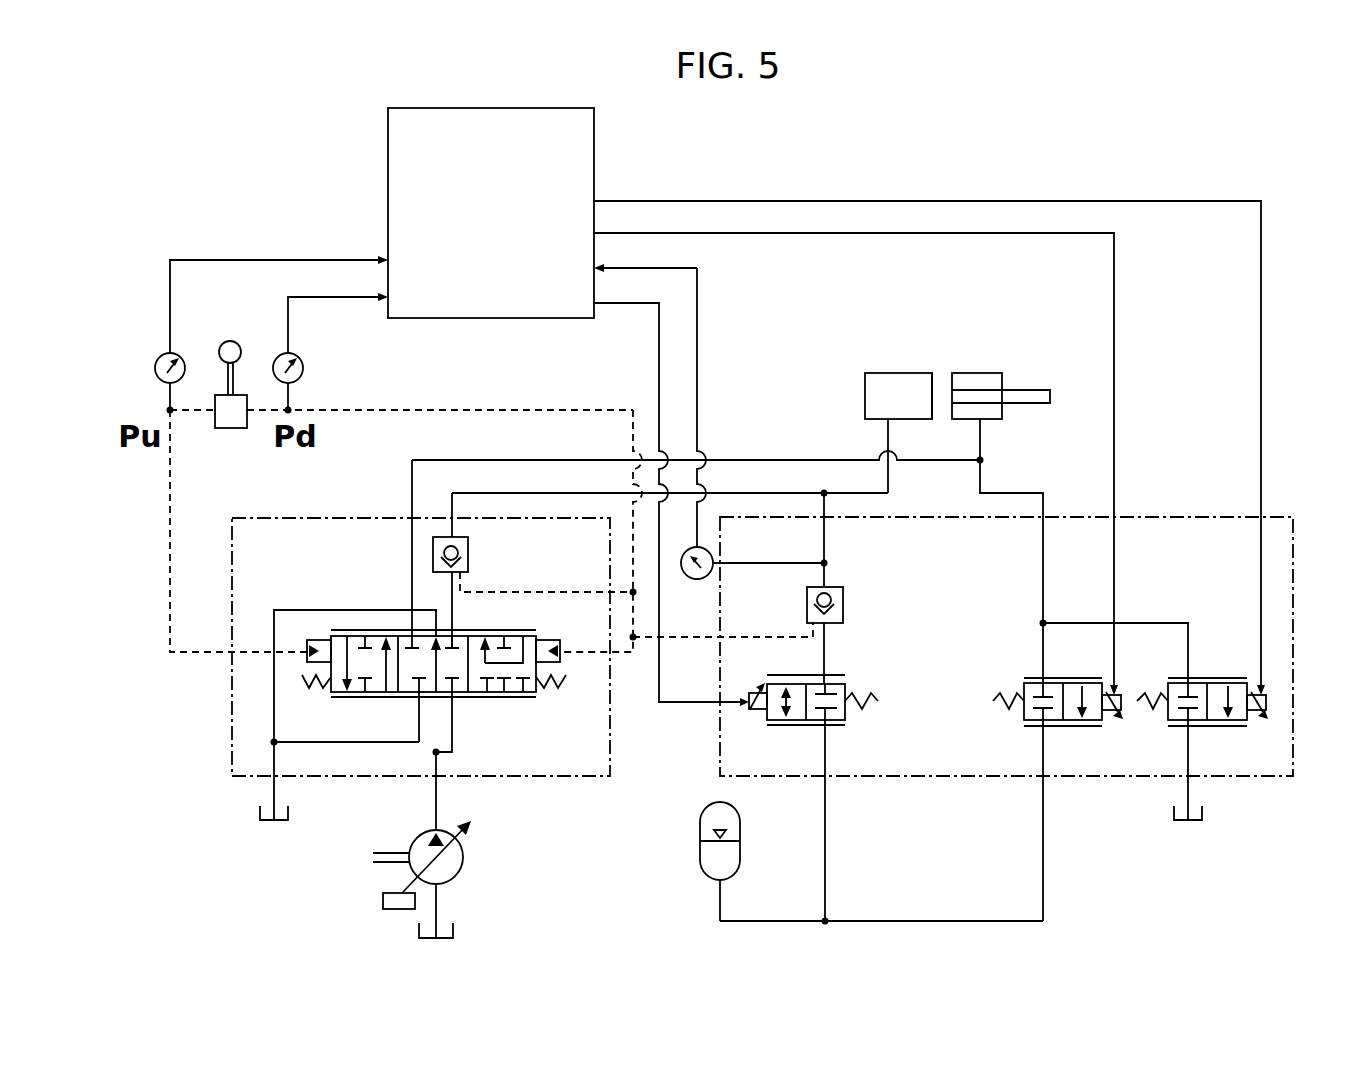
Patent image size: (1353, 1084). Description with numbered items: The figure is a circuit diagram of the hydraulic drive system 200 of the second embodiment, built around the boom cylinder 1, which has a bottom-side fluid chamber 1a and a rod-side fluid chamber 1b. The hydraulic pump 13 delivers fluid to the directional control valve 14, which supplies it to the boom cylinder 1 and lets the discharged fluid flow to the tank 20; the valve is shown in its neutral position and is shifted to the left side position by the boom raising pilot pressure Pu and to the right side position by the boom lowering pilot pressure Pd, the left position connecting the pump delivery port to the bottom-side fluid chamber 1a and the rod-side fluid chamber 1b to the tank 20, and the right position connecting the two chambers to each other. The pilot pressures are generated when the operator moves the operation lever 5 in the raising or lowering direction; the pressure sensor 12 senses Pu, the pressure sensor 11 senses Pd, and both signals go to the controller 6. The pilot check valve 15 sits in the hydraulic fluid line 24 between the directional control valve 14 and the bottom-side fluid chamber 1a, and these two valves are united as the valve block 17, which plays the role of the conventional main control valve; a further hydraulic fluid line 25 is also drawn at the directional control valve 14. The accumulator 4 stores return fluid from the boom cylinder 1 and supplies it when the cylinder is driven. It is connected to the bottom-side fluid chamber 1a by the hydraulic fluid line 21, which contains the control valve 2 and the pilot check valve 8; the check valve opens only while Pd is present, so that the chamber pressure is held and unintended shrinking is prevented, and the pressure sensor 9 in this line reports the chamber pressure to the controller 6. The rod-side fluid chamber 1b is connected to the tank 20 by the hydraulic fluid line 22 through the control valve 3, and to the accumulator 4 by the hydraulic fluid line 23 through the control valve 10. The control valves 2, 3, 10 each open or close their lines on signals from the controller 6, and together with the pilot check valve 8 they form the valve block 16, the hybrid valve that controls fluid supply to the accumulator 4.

The boom cylinder 1 is at (943, 359).
The bottom-side fluid chamber 1a is at (887, 372).
The rod-side fluid chamber 1b is at (978, 372).
The control valve 2 is at (836, 678).
The control valve 3 is at (1221, 678).
The accumulator 4 is at (741, 830).
The operation lever 5 is at (230, 340).
The controller 6 is at (596, 137).
The pilot check valve 8 is at (844, 598).
The pressure sensor 9 is at (693, 580).
The control valve 10 is at (1022, 683).
The pressure sensor 11 is at (298, 356).
The pressure sensor 12 is at (158, 356).
The hydraulic pump 13 is at (464, 857).
The directional control valve 14 is at (500, 698).
The pilot check valve 15 is at (469, 553).
The valve block 16 is at (1188, 515).
The valve block 17 is at (361, 516).
The tank 20 is at (258, 812).
The hydraulic fluid line 21 is at (889, 473).
The hydraulic fluid line 22 is at (1043, 575).
The hydraulic fluid line 23 is at (1040, 849).
The hydraulic fluid line 24 is at (793, 458).
The hydraulic fluid line 25 is at (338, 608).
The hydraulic drive system 200 is at (902, 176).